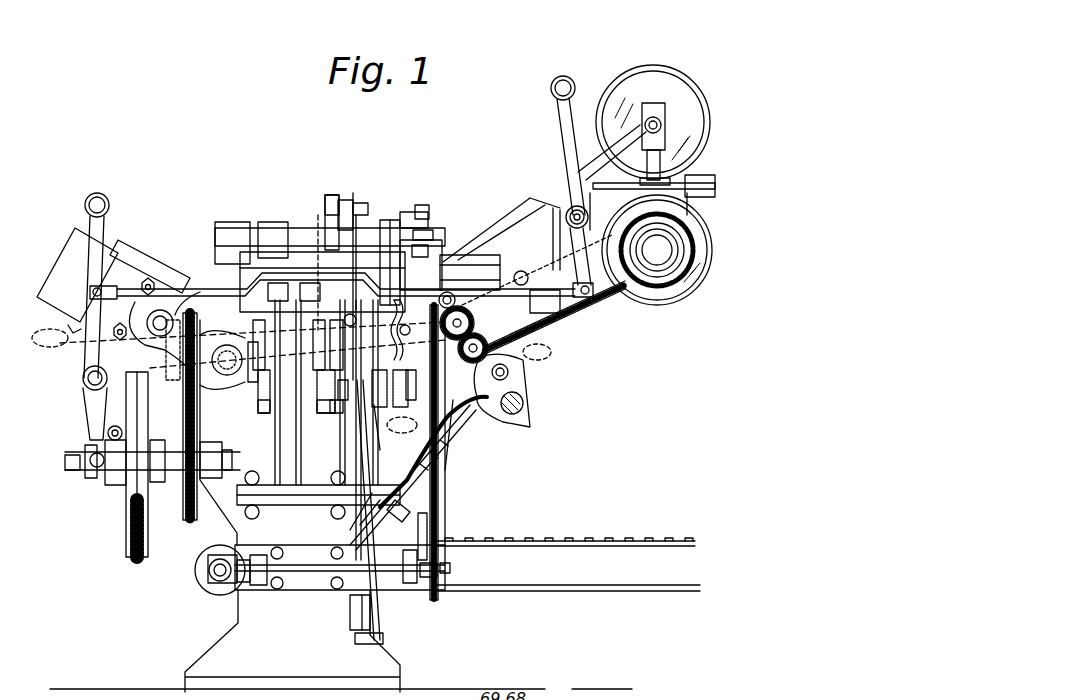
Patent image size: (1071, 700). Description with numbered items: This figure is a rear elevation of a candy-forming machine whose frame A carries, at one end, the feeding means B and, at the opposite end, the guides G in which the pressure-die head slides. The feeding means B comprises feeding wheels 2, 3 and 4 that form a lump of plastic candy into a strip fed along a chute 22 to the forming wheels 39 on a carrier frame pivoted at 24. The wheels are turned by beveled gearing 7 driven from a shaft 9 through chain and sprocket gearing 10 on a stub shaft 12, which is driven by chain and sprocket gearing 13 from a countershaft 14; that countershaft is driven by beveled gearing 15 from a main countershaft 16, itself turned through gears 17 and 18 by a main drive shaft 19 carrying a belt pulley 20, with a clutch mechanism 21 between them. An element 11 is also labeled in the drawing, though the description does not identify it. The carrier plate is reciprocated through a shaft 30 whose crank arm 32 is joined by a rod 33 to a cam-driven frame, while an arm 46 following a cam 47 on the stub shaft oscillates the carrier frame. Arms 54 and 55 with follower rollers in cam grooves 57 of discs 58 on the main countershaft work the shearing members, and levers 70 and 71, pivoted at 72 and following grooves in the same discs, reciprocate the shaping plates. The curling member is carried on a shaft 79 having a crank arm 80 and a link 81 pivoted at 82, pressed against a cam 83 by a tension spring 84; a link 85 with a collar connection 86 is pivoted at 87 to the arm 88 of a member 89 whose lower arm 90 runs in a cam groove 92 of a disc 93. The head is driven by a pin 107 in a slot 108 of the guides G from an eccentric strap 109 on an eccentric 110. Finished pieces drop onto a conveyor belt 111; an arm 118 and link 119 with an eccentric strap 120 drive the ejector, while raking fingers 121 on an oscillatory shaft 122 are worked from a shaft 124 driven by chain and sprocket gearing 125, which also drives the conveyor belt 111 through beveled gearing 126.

The feeding wheel 2 is at (700, 122).
The feeding wheel 3 is at (692, 280).
The feeding wheel 4 is at (715, 188).
The beveled gearing 7 is at (318, 225).
The shaft 9 is at (672, 252).
The chain and sprocket gearing 10 is at (505, 345).
The drive chain 11 is at (470, 358).
The stub shaft 12 is at (466, 315).
The chain and sprocket gearing 13 is at (463, 343).
The countershaft 14 is at (228, 378).
The beveled gearing 15 is at (252, 390).
The main countershaft 16 is at (205, 400).
The gear 17 is at (185, 385).
The gear 18 is at (200, 440).
The main drive shaft 19 is at (73, 472).
The belt pulley 20 is at (137, 557).
The clutch mechanism 21 is at (112, 475).
The chute 22 is at (520, 240).
The pivot 24 is at (521, 271).
The shaft 30 is at (524, 404).
The crank arm 32 is at (514, 378).
The rod 33 is at (402, 425).
The forming wheels 39 is at (430, 245).
The arm 46 is at (485, 240).
The cam 47 is at (450, 290).
The arm 54 is at (215, 264).
The arm 55 is at (352, 280).
The cam groove 57 is at (343, 418).
The disc 58 is at (298, 419).
The lever 70 is at (322, 485).
The lever 71 is at (258, 478).
The pivot 72 is at (295, 505).
The shaft 79 is at (248, 236).
The crank arm 80 is at (332, 195).
The link 81 is at (360, 215).
The pivot 82 is at (352, 510).
The cam 83 is at (346, 395).
The tension spring 84 is at (392, 302).
The link 85 is at (370, 205).
The collar connection 86 is at (350, 200).
The pivot 87 is at (424, 205).
The arm 88 is at (407, 212).
The member 89 is at (391, 262).
The arm 90 is at (407, 337).
The cam groove 92 is at (381, 427).
The disc 93 is at (417, 387).
The pin 107 is at (160, 315).
The slot 108 is at (238, 345).
The eccentric strap 109 is at (84, 360).
The eccentric 110 is at (236, 292).
The conveyor belt 111 is at (532, 541).
The arm 118 is at (385, 632).
The link 119 is at (372, 612).
The eccentric strap 120 is at (372, 410).
The raking fingers 121 is at (432, 472).
The oscillatory shaft 122 is at (465, 420).
The shaft 124 is at (450, 570).
The chain and sprocket gearing 125 is at (438, 500).
The beveled gearing 126 is at (226, 590).
The frame A is at (460, 445).
The feeding means B is at (690, 160).
The guides G is at (65, 262).